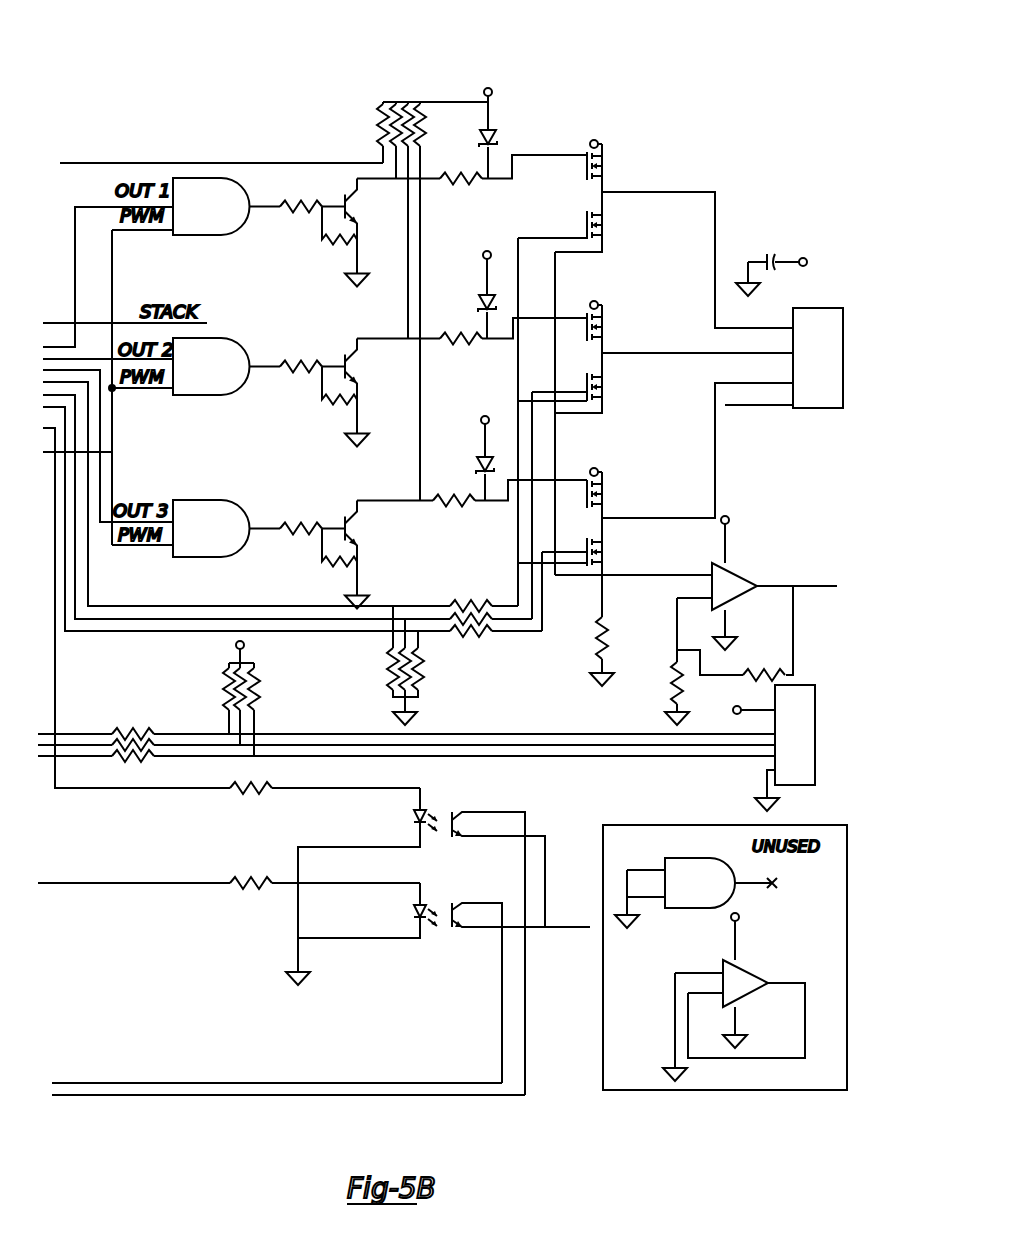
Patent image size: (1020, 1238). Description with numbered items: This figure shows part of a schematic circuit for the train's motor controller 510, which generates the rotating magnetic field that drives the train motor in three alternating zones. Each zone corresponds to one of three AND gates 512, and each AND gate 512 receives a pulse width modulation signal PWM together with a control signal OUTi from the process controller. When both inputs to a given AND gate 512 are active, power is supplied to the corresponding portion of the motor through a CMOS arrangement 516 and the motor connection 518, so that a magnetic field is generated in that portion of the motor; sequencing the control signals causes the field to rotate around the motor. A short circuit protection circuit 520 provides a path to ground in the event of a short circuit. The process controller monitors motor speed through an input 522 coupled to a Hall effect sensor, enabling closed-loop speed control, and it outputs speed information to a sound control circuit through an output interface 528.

The motor controller 510 is at (572, 92).
The AND gate 512 is at (213, 178).
The CMOS arrangement 516 is at (628, 145).
The motor connection 518 is at (828, 308).
The short circuit protection circuit 520 is at (765, 520).
The input 522 is at (815, 730).
The output interface 528 is at (287, 970).